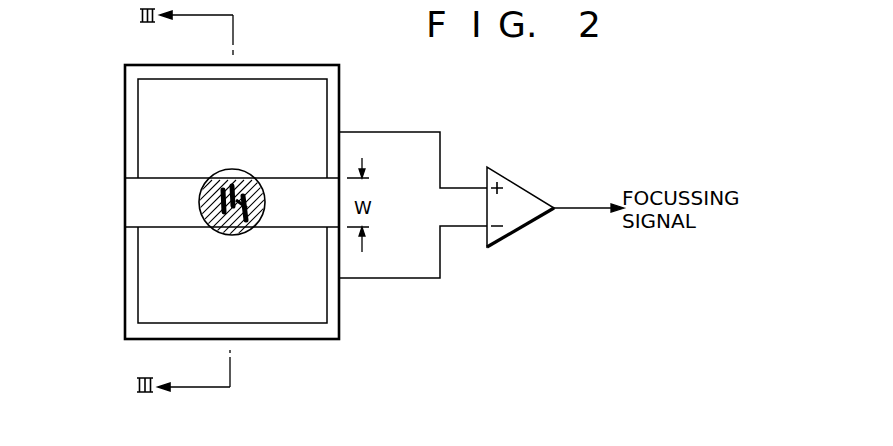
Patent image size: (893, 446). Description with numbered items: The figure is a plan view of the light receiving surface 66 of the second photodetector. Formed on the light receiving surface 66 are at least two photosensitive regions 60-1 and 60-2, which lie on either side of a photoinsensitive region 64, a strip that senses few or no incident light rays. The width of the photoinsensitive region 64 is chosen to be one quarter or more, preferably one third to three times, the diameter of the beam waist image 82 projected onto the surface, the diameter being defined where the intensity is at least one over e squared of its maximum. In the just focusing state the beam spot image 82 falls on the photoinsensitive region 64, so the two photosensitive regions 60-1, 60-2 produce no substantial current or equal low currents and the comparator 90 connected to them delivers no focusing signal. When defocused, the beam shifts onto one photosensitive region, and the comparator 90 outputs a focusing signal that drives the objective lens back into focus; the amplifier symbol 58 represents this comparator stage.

The differential amplifier 58 is at (508, 170).
The photosensitive region 60-1 is at (148, 130).
The photosensitive region 60-2 is at (148, 280).
The photoinsensitive region 64 is at (133, 205).
The light receiving surface 66 is at (289, 65).
The beam waist image 82 is at (240, 172).
The comparator 90 is at (523, 218).